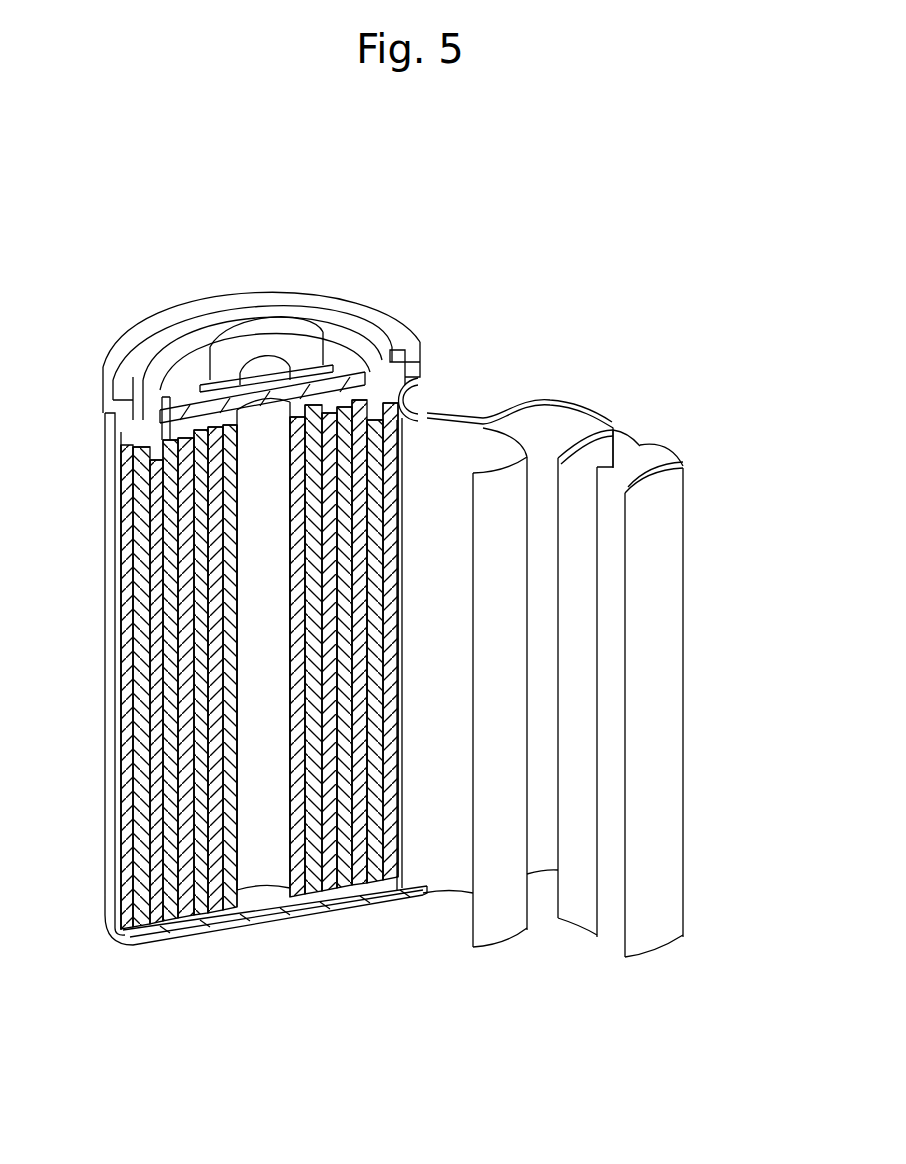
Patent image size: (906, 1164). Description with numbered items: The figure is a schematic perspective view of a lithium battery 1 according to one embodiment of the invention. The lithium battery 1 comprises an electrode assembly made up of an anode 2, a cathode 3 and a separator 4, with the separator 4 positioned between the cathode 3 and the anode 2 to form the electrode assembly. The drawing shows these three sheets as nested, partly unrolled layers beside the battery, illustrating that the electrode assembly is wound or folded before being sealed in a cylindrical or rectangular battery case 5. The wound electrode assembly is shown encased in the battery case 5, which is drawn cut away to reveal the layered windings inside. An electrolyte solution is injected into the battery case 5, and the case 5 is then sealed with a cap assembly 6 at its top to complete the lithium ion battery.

The lithium battery 1 is at (652, 380).
The anode 2 is at (668, 566).
The cathode 3 is at (575, 468).
The separator 4 is at (636, 468).
The battery case 5 is at (108, 868).
The cap assembly 6 is at (275, 327).